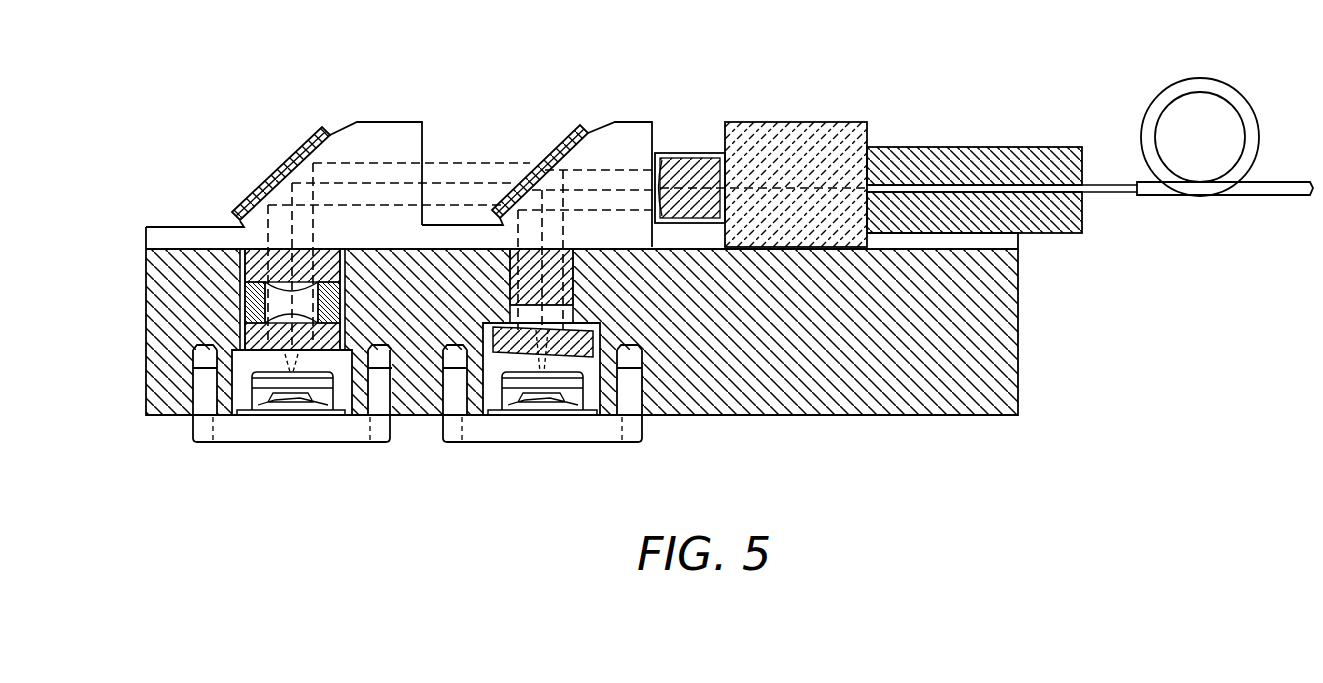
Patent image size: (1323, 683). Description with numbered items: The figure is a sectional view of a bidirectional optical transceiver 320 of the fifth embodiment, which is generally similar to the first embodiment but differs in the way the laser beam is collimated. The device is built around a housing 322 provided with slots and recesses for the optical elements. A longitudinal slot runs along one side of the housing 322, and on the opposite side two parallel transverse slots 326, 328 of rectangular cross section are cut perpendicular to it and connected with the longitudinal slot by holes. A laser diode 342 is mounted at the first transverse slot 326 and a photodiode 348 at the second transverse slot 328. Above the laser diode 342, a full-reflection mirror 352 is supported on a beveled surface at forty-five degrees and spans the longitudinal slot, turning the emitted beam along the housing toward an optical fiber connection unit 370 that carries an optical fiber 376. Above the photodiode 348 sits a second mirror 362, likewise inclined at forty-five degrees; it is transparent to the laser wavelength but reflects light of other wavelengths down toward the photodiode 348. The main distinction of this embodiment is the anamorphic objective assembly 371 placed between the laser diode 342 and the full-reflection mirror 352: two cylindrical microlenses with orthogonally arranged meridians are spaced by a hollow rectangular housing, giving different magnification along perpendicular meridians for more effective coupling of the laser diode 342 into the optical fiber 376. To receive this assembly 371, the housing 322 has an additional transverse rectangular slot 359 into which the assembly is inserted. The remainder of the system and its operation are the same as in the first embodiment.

The bidirectional optical transceiver 320 is at (648, 78).
The housing 322 is at (140, 253).
The transverse slot 326 is at (367, 398).
The transverse slot 328 is at (606, 393).
The laser diode 342 is at (283, 397).
The photodiode 348 is at (537, 397).
The full-reflection mirror 352 is at (273, 145).
The additional transverse rectangular slot 359 is at (203, 345).
The second mirror 362 is at (548, 133).
The optical fiber connection unit 370 is at (913, 120).
The anamorphic objective assembly 371 is at (243, 290).
The optical fiber 376 is at (1107, 178).